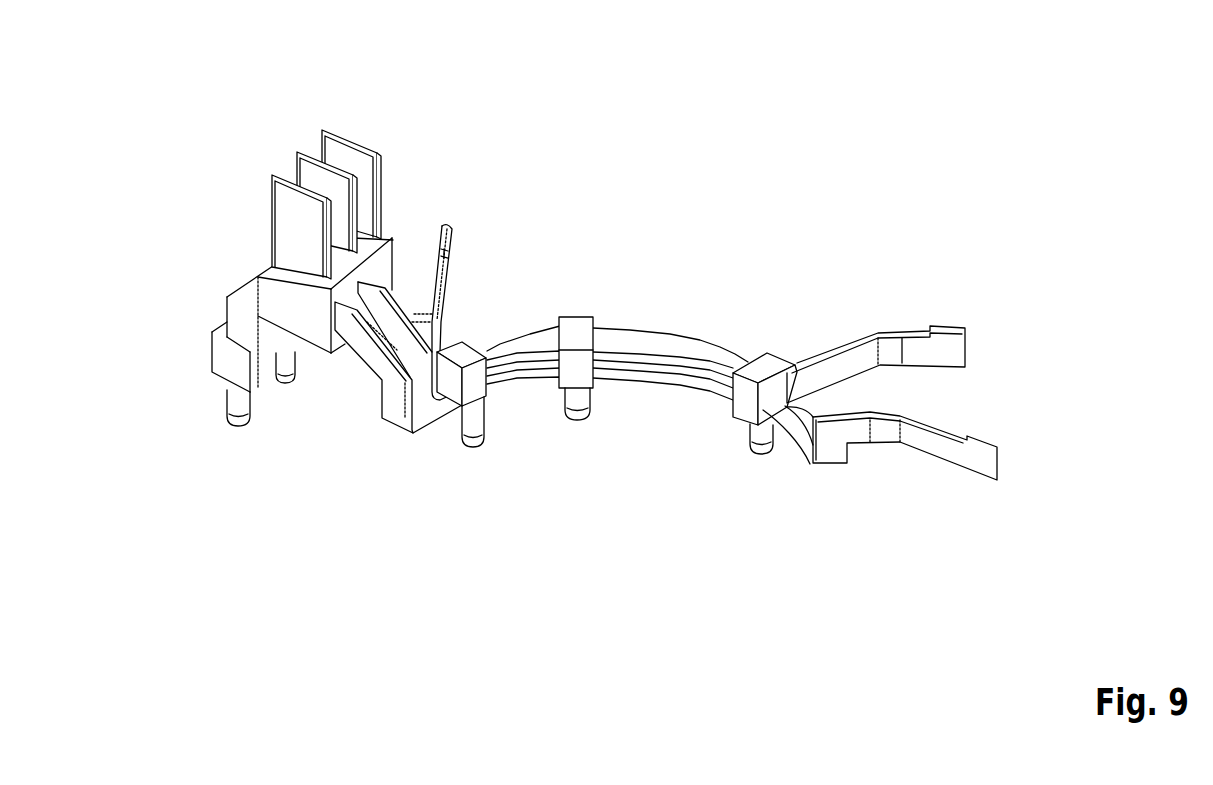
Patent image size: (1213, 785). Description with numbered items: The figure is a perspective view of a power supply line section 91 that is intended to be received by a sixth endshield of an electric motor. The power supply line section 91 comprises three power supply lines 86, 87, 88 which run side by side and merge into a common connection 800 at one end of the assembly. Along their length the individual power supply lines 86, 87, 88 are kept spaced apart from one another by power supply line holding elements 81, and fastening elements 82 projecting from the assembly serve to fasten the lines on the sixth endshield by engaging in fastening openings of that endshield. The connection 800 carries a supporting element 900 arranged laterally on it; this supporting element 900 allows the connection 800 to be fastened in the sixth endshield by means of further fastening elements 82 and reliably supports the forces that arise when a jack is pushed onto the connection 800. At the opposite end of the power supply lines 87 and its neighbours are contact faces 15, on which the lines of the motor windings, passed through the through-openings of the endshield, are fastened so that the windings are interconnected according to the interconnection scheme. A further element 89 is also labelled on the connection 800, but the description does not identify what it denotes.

The connection 800 is at (288, 124).
The power supply line 88 is at (446, 226).
The housing body 89 is at (279, 307).
The supporting element 900 is at (229, 357).
The fastening elements 82 is at (232, 401).
The power supply line holding elements 81 is at (465, 350).
The power supply line 86 is at (655, 338).
The power supply line section 91 is at (724, 263).
The contact faces 15 is at (946, 334).
The power supply line 87 is at (925, 447).